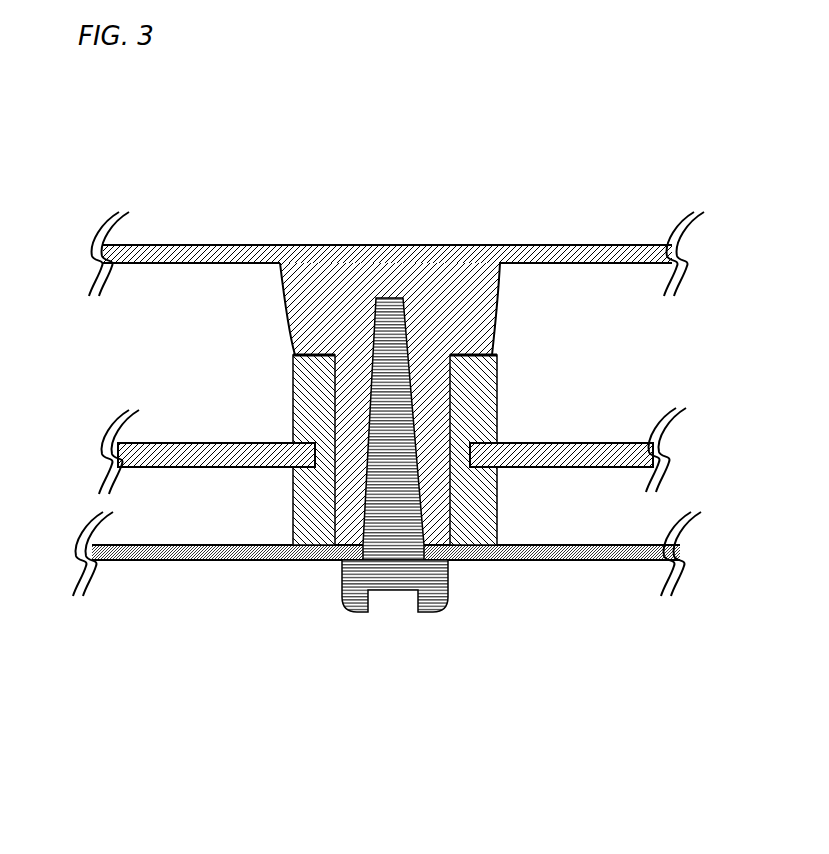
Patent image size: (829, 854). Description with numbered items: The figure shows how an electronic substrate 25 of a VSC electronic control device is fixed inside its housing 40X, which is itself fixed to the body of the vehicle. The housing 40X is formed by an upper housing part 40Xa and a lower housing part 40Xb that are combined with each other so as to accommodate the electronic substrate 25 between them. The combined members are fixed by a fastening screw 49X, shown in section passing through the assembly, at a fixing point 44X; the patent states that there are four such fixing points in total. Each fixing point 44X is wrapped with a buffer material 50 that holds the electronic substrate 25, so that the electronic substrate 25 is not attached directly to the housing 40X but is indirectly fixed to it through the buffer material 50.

The housing 40X is at (388, 413).
The upper housing part 40Xa is at (562, 245).
The lower housing part 40Xb is at (260, 563).
The fixing point 44X is at (490, 317).
The buffer material 50 is at (293, 380).
The electronic substrate 25 is at (617, 465).
The fastening screw 49X is at (395, 562).